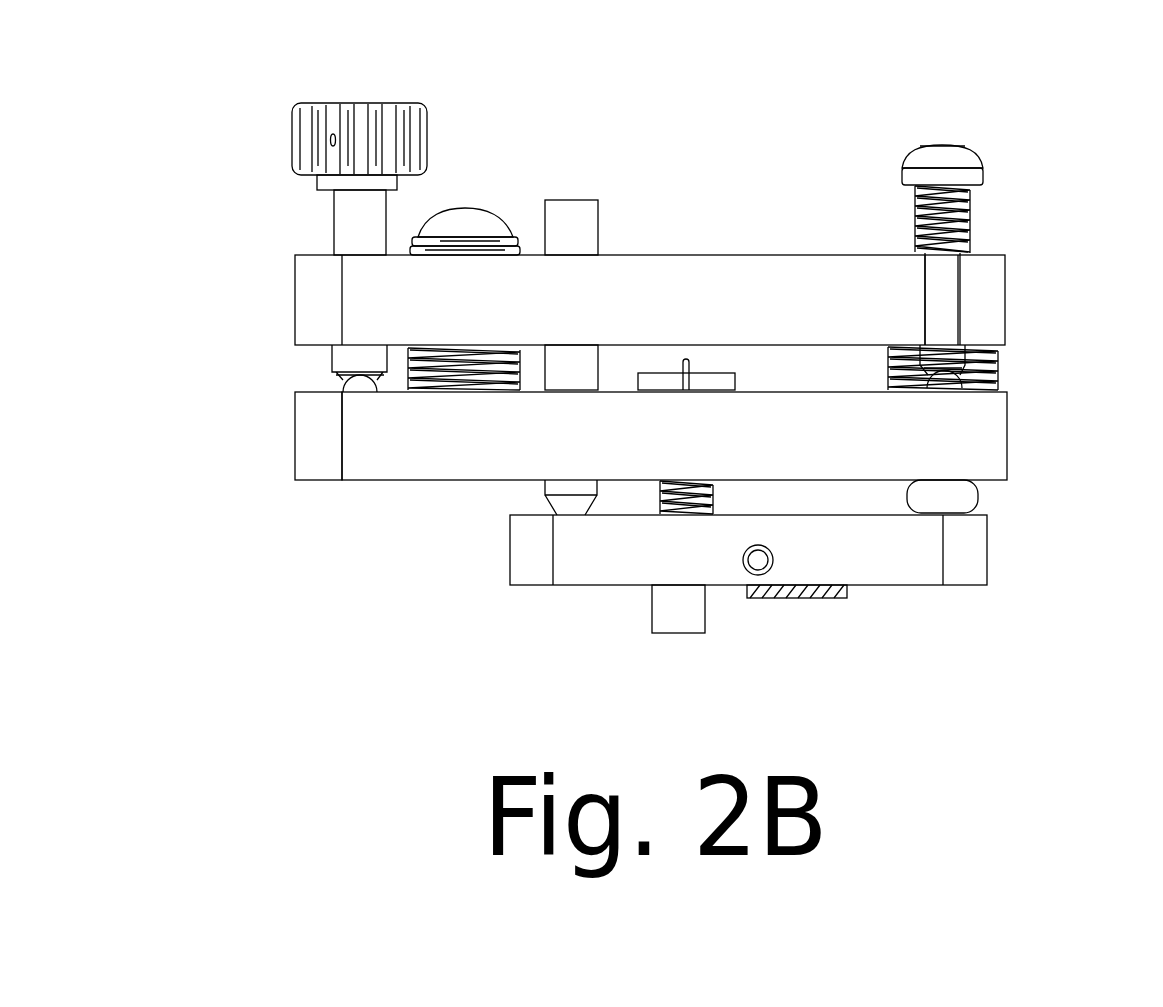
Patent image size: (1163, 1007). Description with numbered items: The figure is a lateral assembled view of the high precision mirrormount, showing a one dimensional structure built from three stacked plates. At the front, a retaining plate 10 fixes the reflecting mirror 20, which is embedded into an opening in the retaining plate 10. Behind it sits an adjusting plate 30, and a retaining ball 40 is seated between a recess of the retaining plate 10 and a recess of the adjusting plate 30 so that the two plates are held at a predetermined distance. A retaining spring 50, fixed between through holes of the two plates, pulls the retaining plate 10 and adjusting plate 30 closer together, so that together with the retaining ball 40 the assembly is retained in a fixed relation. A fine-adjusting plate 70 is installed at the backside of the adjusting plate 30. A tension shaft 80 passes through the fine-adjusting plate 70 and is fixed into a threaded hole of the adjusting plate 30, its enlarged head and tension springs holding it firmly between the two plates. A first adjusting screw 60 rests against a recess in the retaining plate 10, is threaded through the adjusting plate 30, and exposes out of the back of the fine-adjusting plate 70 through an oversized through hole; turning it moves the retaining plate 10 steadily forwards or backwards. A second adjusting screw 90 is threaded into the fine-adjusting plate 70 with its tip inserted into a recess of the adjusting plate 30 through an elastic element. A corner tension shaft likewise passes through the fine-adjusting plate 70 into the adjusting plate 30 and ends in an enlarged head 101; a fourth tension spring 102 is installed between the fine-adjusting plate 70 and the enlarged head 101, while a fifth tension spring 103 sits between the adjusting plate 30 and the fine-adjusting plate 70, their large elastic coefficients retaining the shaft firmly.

The retaining plate 10 is at (540, 545).
The reflecting mirror 20 is at (847, 598).
The adjusting plate 30 is at (298, 412).
The retaining ball 40 is at (1007, 448).
The retaining spring 50 is at (652, 497).
The first adjusting screw 60 is at (577, 205).
The fine-adjusting plate 70 is at (303, 318).
The tension shaft 80 is at (462, 208).
The second adjusting screw 90 is at (335, 235).
The enlarged head 101 is at (930, 145).
The fourth tension spring 102 is at (972, 212).
The fifth tension spring 103 is at (993, 352).